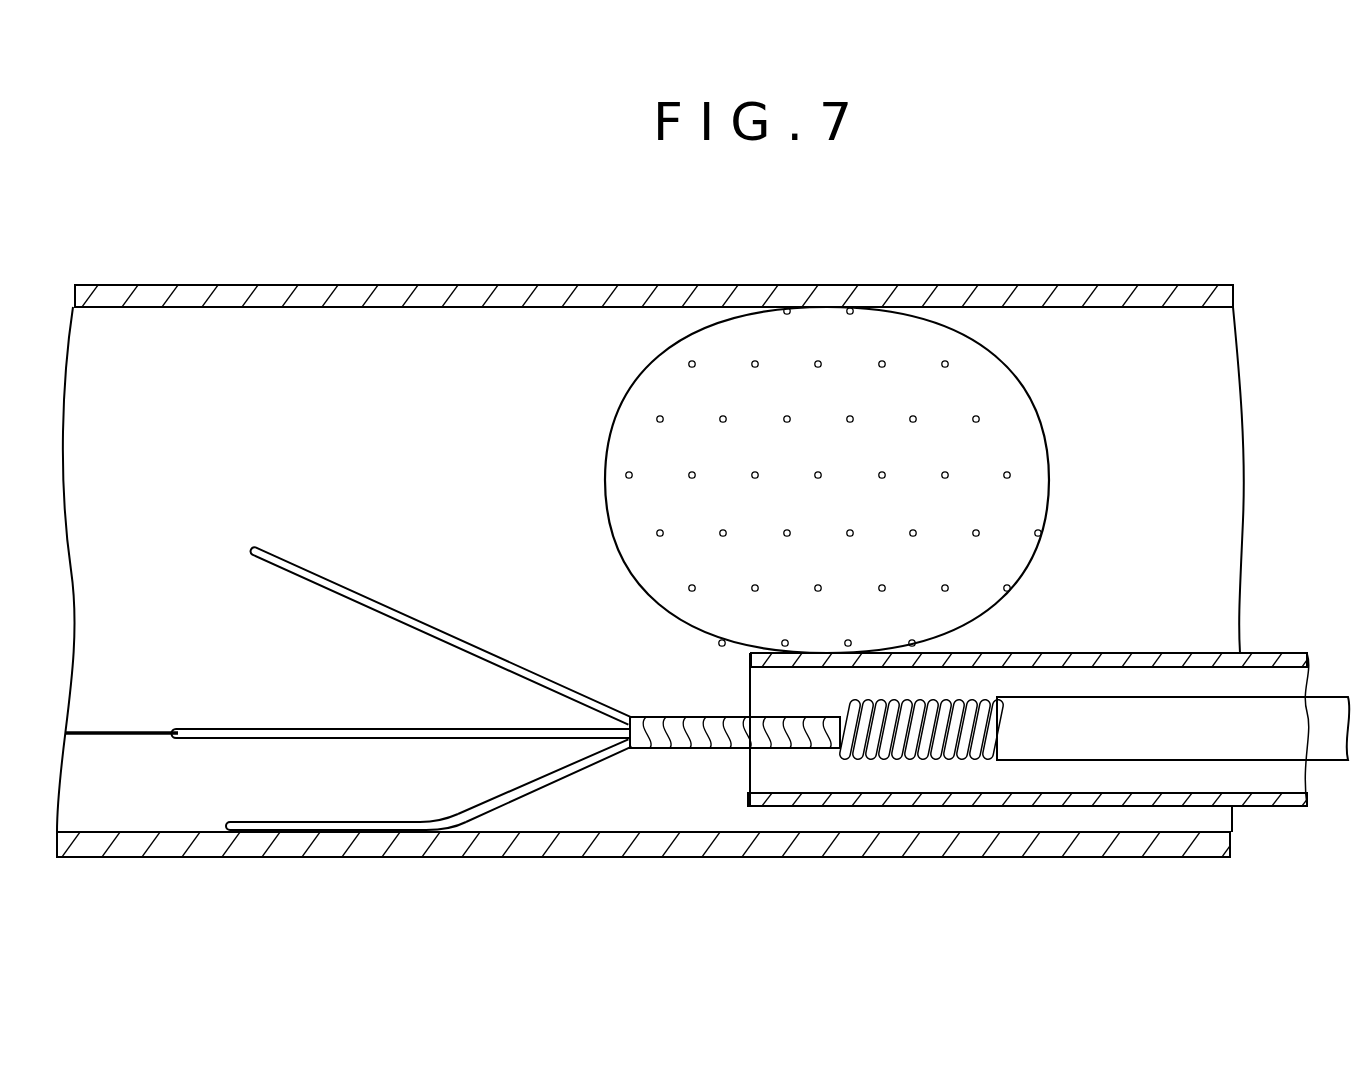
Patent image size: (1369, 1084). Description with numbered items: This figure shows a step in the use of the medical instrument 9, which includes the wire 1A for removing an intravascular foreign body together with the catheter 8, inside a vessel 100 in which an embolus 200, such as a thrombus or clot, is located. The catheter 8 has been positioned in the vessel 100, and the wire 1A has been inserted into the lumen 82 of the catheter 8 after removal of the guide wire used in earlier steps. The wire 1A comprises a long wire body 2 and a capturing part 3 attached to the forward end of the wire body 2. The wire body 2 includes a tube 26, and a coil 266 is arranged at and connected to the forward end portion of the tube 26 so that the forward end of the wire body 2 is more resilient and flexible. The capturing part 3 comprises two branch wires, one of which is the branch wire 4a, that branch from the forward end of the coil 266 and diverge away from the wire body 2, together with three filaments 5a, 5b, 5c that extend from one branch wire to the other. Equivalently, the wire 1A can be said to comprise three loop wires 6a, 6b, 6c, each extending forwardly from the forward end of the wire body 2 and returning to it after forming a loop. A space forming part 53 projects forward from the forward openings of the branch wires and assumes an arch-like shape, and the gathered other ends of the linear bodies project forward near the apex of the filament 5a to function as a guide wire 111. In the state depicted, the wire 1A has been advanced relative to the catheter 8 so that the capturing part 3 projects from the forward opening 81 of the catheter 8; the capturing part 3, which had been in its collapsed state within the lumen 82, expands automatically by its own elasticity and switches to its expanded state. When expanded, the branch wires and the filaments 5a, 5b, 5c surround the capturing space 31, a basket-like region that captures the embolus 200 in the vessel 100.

The vessel 100 is at (1092, 297).
The embolus 200 is at (1050, 455).
The medical instrument 9 is at (1044, 700).
The catheter 8 is at (1044, 753).
The lumen 82 is at (1282, 687).
The forward opening 81 is at (746, 775).
The coil 266 is at (918, 752).
The wire body 2 is at (1179, 801).
The tube 26 is at (1312, 742).
The wire for removing an intravascular foreign body 1A is at (451, 695).
The guide wire 111 is at (98, 738).
The filament 5a is at (387, 734).
The loop wire 6a is at (387, 770).
The space forming part 53 is at (240, 738).
The filament 5b is at (441, 628).
The loop wire 6b is at (448, 640).
The filament 5c is at (433, 828).
The loop wire 6c is at (433, 828).
The capturing space 31 is at (548, 750).
The capturing part 3 is at (735, 725).
The branch wire 4a is at (720, 750).